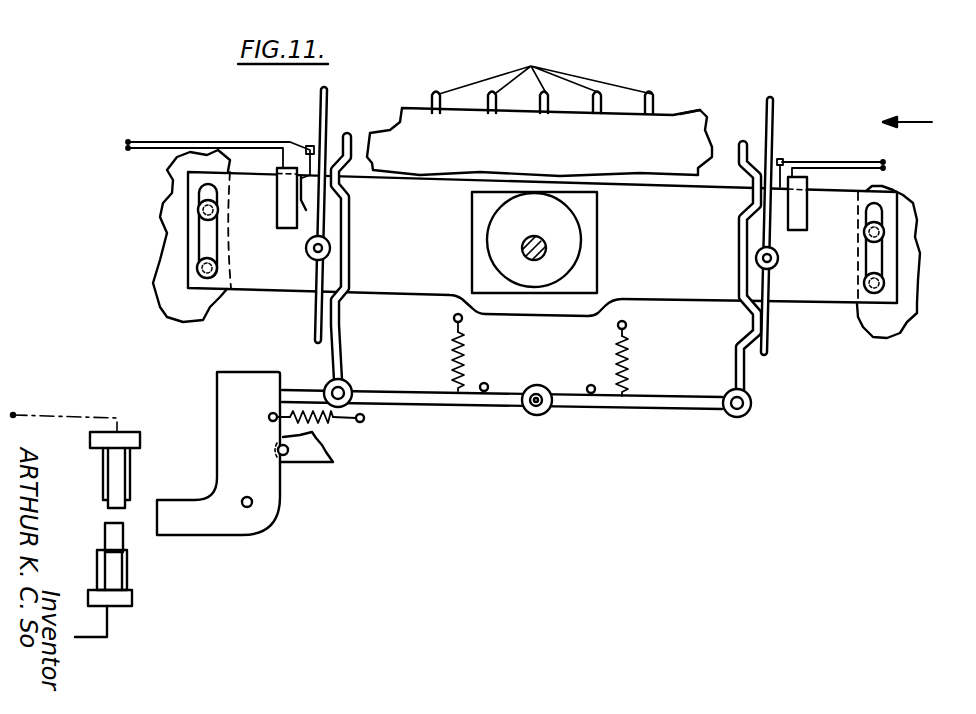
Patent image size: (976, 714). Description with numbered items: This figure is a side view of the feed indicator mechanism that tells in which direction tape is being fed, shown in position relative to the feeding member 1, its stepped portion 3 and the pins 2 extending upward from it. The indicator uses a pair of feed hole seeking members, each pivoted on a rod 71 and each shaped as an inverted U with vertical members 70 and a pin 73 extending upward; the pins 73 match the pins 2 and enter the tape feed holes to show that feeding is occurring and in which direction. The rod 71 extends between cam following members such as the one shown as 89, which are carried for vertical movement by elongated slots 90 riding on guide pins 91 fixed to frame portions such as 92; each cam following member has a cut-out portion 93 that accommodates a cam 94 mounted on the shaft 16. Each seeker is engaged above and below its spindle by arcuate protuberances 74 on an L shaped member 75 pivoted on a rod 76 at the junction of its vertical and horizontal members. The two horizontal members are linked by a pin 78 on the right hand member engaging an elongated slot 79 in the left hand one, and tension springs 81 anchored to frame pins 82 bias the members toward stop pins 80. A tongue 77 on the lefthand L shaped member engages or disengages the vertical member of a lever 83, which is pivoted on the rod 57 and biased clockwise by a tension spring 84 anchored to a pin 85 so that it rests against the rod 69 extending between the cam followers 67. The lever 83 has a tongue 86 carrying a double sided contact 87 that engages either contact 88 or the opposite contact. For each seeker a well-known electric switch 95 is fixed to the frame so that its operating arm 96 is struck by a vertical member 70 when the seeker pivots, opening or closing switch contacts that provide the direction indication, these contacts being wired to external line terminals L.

The feeding member 1 is at (536, 151).
The pins 2 is at (542, 76).
The stepped portion 3 is at (651, 125).
The shaft 16 is at (545, 256).
The rod 57 is at (250, 506).
The cam followers 67 is at (317, 457).
The rod 69 is at (286, 455).
The vertical members 70 is at (319, 136).
The rod 71 is at (316, 250).
The pin 73 is at (320, 98).
The arcuate protuberances 74 is at (325, 325).
The L shaped member 75 is at (349, 237).
The rod 76 is at (346, 391).
The tongue 77 is at (320, 388).
The pin 78 is at (547, 405).
The elongated slot 79 is at (532, 404).
The stop pin 80 is at (589, 386).
The tension springs 81 is at (618, 345).
The pin 82 is at (455, 317).
The lever 83 is at (222, 407).
The tension spring 84 is at (322, 420).
The pin 85 is at (339, 423).
The tongue 86 is at (137, 533).
The double sided contact 87 is at (105, 533).
The contact 88 is at (103, 548).
The cam following member 89 is at (409, 213).
The elongated slots 90 is at (204, 233).
The guide pins 91 is at (199, 266).
The apparatus frame portion 92 is at (167, 293).
The cut-out portion 93 is at (590, 202).
The cam 94 is at (571, 228).
The electric switch 95 is at (286, 217).
The operating arm 96 is at (296, 148).
The line terminals L is at (503, 154).